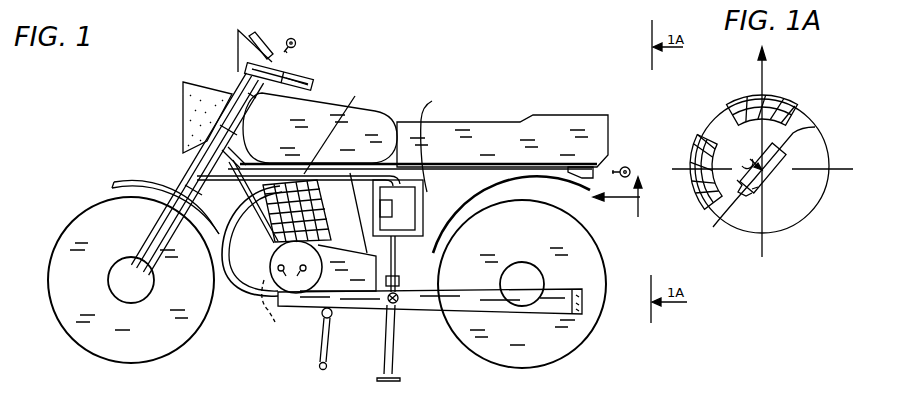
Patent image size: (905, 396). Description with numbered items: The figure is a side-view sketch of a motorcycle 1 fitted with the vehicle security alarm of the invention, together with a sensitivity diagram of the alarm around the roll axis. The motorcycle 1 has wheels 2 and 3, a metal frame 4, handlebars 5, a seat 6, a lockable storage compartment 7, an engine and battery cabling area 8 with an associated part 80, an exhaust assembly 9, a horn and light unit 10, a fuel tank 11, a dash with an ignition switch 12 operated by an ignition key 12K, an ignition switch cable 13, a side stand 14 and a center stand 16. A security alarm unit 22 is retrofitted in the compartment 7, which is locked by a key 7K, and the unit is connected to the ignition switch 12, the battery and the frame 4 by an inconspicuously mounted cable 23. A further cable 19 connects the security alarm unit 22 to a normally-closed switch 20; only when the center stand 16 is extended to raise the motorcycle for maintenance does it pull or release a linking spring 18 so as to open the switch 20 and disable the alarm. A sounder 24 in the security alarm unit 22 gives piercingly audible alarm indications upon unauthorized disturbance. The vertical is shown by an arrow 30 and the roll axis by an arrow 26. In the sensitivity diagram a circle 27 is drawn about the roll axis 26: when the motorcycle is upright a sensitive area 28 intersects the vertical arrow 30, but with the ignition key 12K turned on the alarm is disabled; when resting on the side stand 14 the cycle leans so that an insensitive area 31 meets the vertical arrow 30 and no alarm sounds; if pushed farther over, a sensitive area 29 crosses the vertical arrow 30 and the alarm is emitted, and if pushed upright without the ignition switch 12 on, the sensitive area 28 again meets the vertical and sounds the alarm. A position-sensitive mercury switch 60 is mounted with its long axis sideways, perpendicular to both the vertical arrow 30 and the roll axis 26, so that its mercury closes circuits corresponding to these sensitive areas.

In FIG. 1, the motorcycle 1 is at (163, 56).
In FIG. 1, the wheel 2 is at (94, 218).
In FIG. 1, the wheel 3 is at (538, 220).
In FIG. 1, the metal frame 4 is at (180, 182).
In FIG. 1, the handlebars 5 is at (314, 80).
In FIG. 1, the seat 6 is at (450, 132).
In FIG. 1, the lockable storage compartment 7 is at (567, 167).
In FIG. 1, the key 7K is at (624, 167).
In FIG. 1, the engine and battery cabling area 8 is at (264, 300).
In FIG. 1, the exhaust pipe bracket 80 is at (279, 310).
In FIG. 1, the exhaust assembly 9 is at (562, 306).
In FIG. 1, the horn and light unit 10 is at (190, 127).
In FIG. 1, the fuel tank 11 is at (308, 110).
In FIG. 1, the ignition switch 12 is at (276, 60).
In FIG. 1, the ignition key 12K is at (297, 41).
In FIG. 1, the ignition switch cable 13 is at (289, 76).
In FIG. 1, the side stand 14 is at (328, 340).
In FIG. 1, the center stand 16 is at (396, 356).
In FIG. 1, the linking spring 18 is at (400, 303).
In FIG. 1, the cable 19 is at (431, 250).
In FIG. 1, the normally-closed switch 20 is at (385, 302).
In FIG. 1, the security alarm unit 22 is at (436, 141).
In FIG. 1, the cable 23 is at (339, 129).
In FIG. 1, the sounder 24 is at (392, 208).
In FIG. 1, the roll axis arrow 26 is at (622, 197).
In FIG. 1A, the roll axis arrow 26 is at (718, 226).
In FIG. 1A, the circle 27 is at (798, 228).
In FIG. 1A, the sensitive area 28 is at (799, 108).
In FIG. 1A, the sensitive area 29 is at (698, 198).
In FIG. 1, the vertical arrow 30 is at (636, 207).
In FIG. 1A, the vertical arrow 30 is at (766, 50).
In FIG. 1A, the insensitive area 31 is at (722, 118).
In FIG. 1A, the position-sensitive mercury switch 60 is at (787, 150).